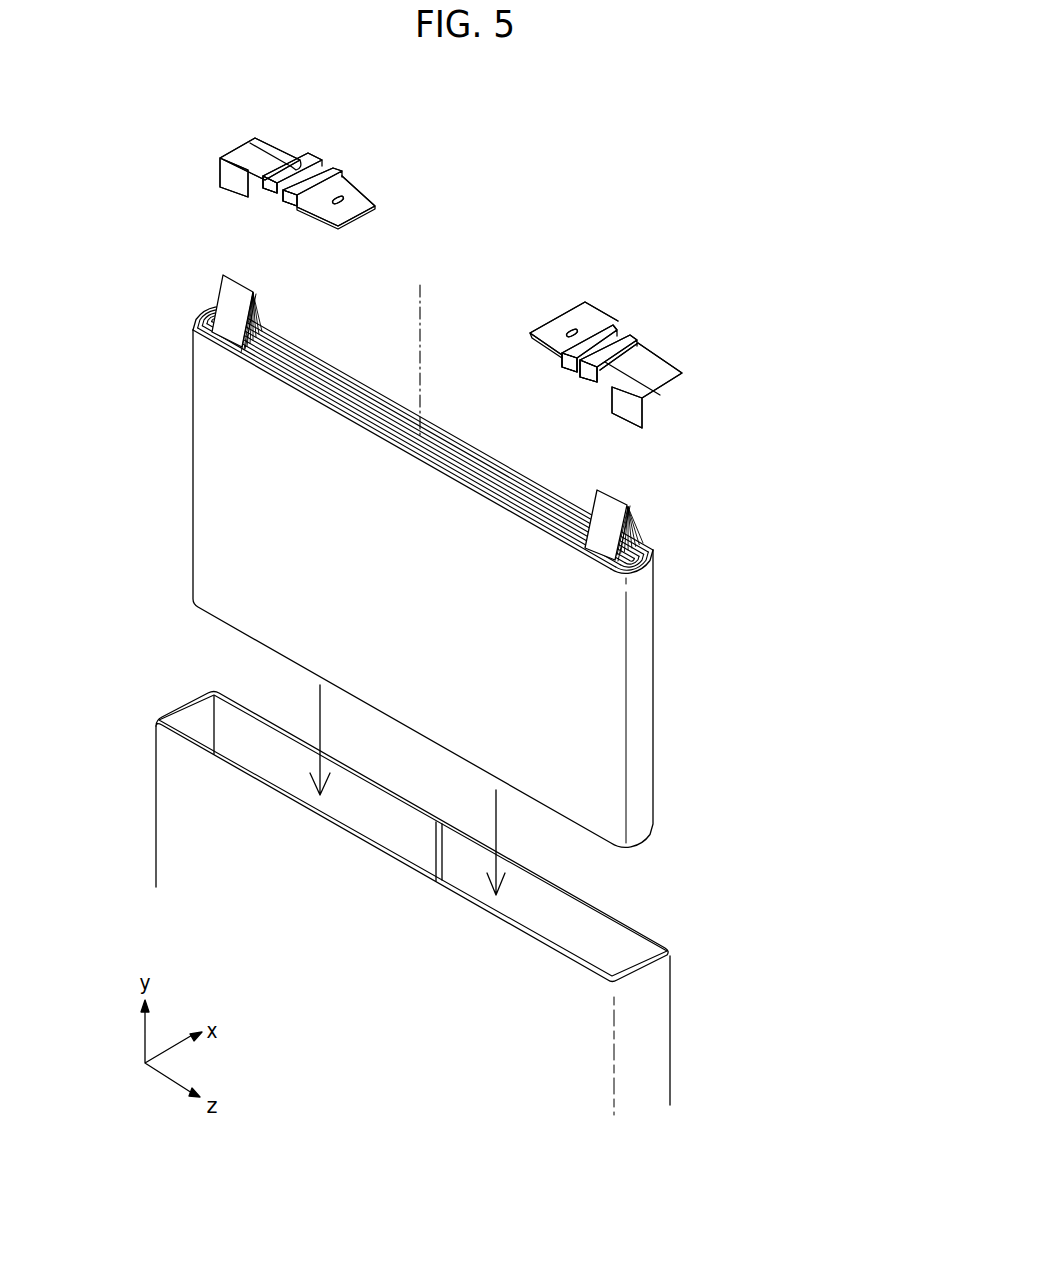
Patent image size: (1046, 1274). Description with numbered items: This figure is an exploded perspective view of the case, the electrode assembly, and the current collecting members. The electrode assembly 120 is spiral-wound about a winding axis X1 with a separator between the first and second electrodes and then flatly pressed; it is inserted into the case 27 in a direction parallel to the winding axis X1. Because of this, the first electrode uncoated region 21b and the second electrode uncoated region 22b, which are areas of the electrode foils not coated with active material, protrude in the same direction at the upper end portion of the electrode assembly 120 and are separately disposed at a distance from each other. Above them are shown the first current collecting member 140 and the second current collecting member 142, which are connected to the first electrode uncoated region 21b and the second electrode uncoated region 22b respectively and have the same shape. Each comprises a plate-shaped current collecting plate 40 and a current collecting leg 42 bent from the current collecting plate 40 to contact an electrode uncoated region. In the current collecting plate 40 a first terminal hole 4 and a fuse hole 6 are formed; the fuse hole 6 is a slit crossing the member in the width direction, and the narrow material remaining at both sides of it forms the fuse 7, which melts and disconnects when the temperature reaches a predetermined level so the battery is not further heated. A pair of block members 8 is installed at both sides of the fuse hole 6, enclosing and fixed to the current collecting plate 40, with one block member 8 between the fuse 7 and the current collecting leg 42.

The electrode assembly 120 is at (448, 558).
The second electrode uncoated region 22b is at (227, 297).
The first electrode uncoated region 21b is at (613, 512).
The winding axis X1 is at (420, 335).
The case 27 is at (657, 1030).
The second current collecting member 142 is at (275, 131).
The first current collecting member 140 is at (598, 321).
The current collecting leg 42 is at (228, 178).
The current collecting plate 40 is at (353, 193).
The block member 8 is at (312, 157).
The fuse hole 6 is at (292, 173).
The fuse 7 is at (270, 197).
The first terminal hole 4 is at (345, 205).